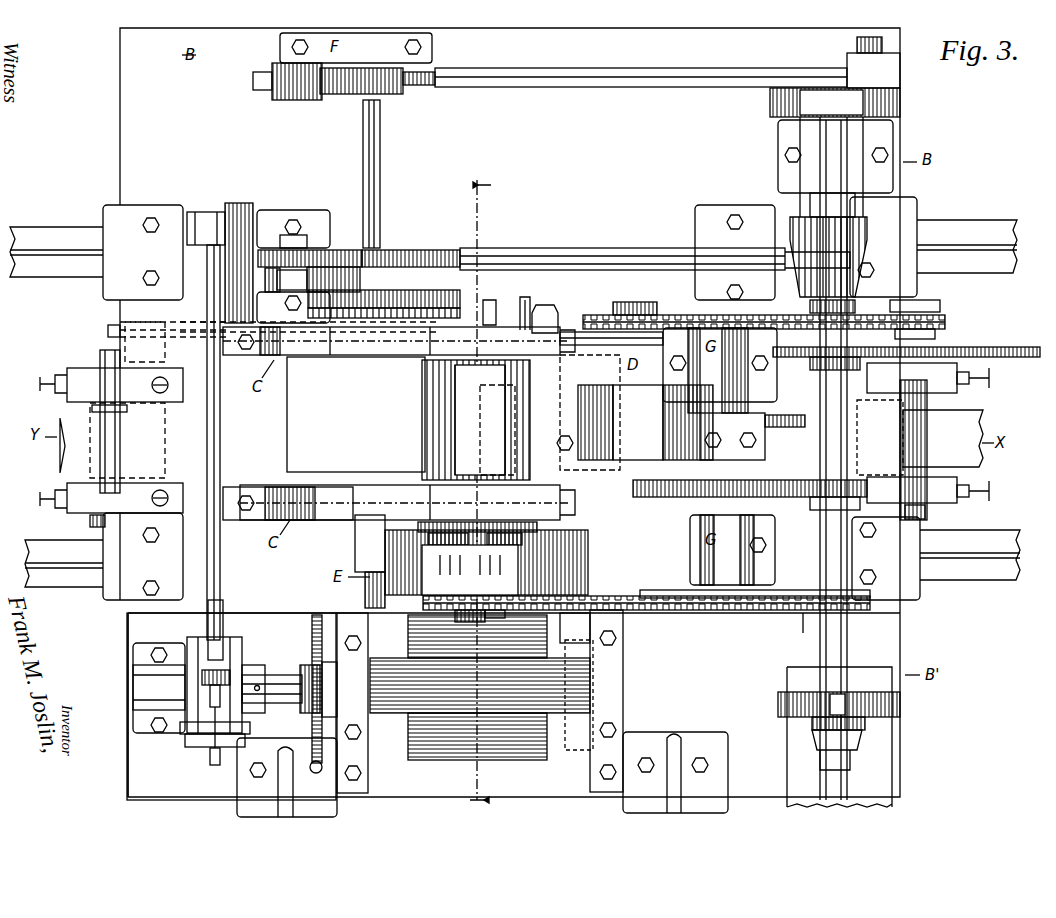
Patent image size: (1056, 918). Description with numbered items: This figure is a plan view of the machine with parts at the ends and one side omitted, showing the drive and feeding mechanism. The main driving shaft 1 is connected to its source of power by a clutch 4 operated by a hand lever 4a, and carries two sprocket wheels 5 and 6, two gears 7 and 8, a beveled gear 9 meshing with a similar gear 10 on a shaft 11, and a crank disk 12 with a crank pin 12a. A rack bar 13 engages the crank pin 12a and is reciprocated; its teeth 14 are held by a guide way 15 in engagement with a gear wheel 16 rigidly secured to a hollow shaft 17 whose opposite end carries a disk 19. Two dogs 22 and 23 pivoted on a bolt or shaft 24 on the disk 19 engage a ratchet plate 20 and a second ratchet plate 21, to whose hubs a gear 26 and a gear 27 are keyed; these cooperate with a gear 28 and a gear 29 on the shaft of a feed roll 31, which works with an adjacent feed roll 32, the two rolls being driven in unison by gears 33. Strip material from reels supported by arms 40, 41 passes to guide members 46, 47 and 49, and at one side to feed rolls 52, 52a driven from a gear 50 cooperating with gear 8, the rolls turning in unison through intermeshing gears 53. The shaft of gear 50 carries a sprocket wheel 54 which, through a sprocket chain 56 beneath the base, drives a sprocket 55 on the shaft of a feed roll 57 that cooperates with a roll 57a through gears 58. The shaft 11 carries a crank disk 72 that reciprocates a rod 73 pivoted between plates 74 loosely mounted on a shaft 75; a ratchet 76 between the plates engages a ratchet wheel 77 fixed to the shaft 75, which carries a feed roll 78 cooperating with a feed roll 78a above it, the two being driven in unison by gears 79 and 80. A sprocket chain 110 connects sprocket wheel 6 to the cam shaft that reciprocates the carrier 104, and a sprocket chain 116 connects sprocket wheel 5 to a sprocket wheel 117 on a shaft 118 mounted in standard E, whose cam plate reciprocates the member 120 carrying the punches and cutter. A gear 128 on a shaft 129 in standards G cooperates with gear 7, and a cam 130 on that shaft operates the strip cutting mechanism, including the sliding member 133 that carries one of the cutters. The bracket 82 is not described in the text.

The main driving shaft 1 is at (853, 256).
The clutch 4 is at (230, 610).
The hand lever 4a is at (830, 700).
The sprocket wheel 5 is at (824, 600).
The sprocket wheel 6 is at (855, 310).
The gear 7 is at (820, 480).
The gear 8 is at (807, 358).
The beveled gear 9 is at (870, 226).
The beveled gear 10 is at (793, 235).
The shaft 11 is at (585, 251).
The crank disk 12 is at (770, 107).
The crank pin 12a is at (857, 56).
The rack bar 13 is at (681, 71).
The teeth 14 is at (420, 86).
The guide way 15 is at (278, 98).
The gear wheel 16 is at (315, 98).
The hollow shaft 17 is at (380, 160).
The disk 19 is at (410, 251).
The ratchet plate 20 is at (320, 273).
The second ratchet plate 21 is at (335, 277).
The dog 22 is at (270, 263).
The dog 23 is at (285, 294).
The bolt or shaft 24 is at (298, 237).
The gear 26 is at (360, 333).
The gear 27 is at (305, 335).
The gear 28 is at (493, 313).
The gear 29 is at (486, 298).
The feed roll 31 is at (422, 378).
The feed roll 32 is at (518, 410).
The gears 33 is at (417, 527).
The arm 40 is at (950, 228).
The arm 41 is at (80, 278).
The guide member 46 is at (909, 386).
The guide member 47 is at (100, 378).
The guide member 49 is at (90, 411).
The gear 50 is at (980, 349).
The feed roll 52 is at (930, 398).
The feed roll 52a is at (920, 437).
The intermeshing gears 53 is at (931, 518).
The sprocket wheel 54 is at (940, 320).
The sprocket 55 is at (108, 328).
The sprocket chain 56 is at (168, 345).
The feed roll 57 is at (165, 460).
The feed roll 57a is at (90, 475).
The gears 58 is at (88, 523).
The crank disk 72 is at (238, 204).
The rod 73 is at (222, 467).
The plates 74 is at (193, 645).
The shaft 75 is at (285, 702).
The ratchet 76 is at (210, 737).
The ratchet wheel 77 is at (218, 762).
The feed roll 78 is at (463, 758).
The feed roll 78a is at (480, 685).
The gear 79 is at (313, 645).
The gear 80 is at (310, 667).
The bracket 82 is at (482, 774).
The carrier 104 is at (762, 448).
The sprocket chain 110 is at (693, 314).
The sprocket chain 116 is at (725, 612).
The sprocket wheel 117 is at (457, 620).
The shaft 118 is at (482, 620).
The reciprocating member 120 is at (412, 515).
The gear 128 is at (660, 497).
The shaft 129 is at (708, 592).
The cam 130 is at (802, 425).
The sliding member 133 is at (291, 426).